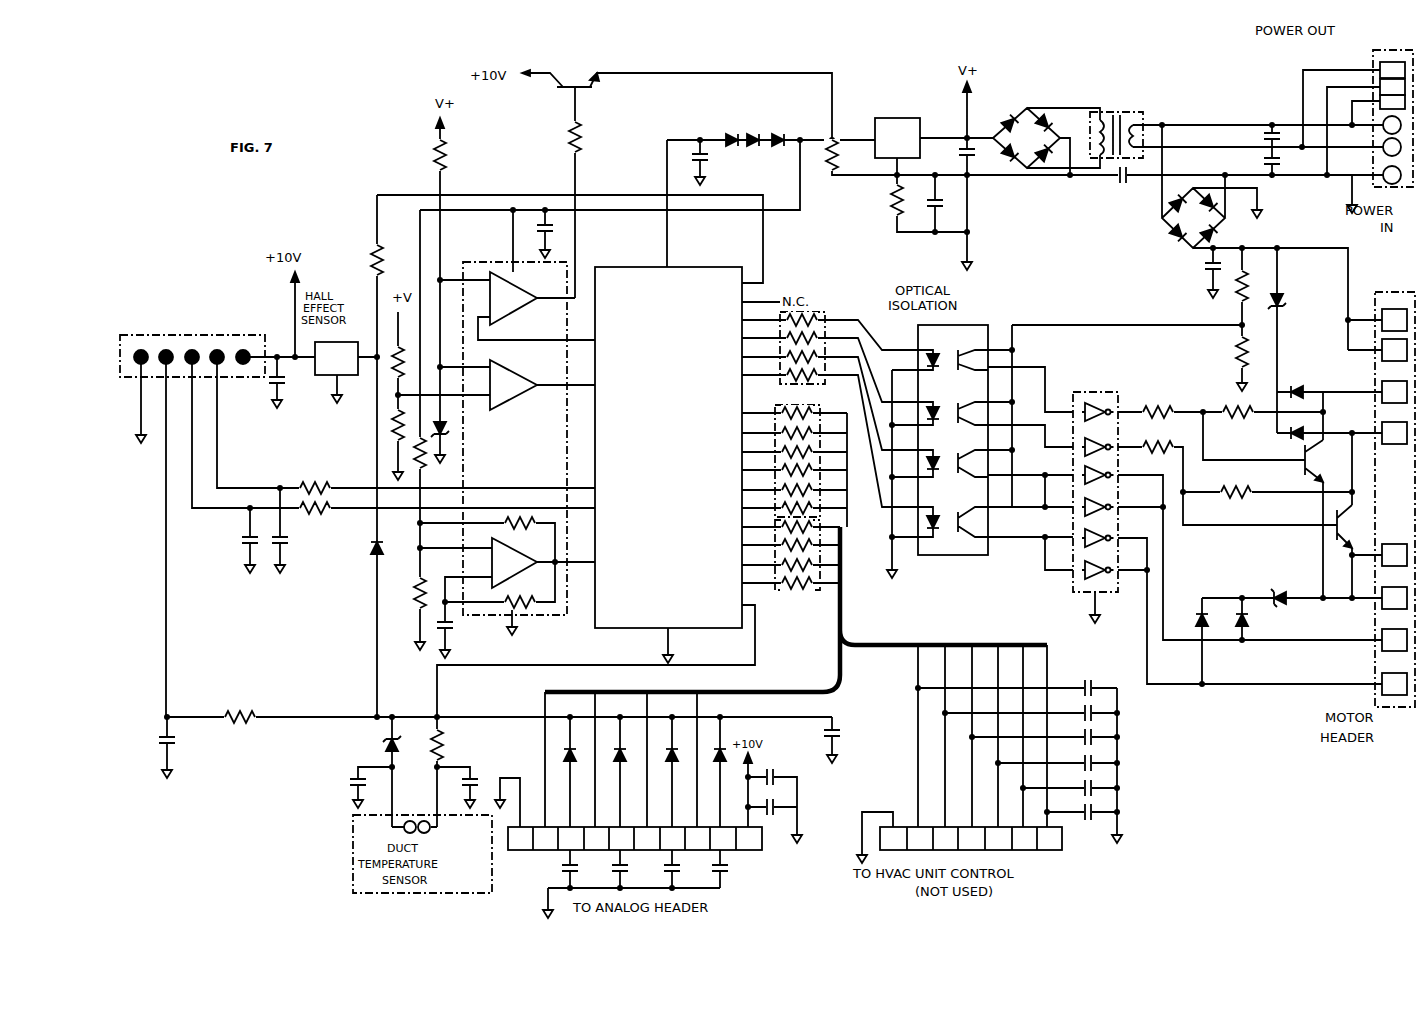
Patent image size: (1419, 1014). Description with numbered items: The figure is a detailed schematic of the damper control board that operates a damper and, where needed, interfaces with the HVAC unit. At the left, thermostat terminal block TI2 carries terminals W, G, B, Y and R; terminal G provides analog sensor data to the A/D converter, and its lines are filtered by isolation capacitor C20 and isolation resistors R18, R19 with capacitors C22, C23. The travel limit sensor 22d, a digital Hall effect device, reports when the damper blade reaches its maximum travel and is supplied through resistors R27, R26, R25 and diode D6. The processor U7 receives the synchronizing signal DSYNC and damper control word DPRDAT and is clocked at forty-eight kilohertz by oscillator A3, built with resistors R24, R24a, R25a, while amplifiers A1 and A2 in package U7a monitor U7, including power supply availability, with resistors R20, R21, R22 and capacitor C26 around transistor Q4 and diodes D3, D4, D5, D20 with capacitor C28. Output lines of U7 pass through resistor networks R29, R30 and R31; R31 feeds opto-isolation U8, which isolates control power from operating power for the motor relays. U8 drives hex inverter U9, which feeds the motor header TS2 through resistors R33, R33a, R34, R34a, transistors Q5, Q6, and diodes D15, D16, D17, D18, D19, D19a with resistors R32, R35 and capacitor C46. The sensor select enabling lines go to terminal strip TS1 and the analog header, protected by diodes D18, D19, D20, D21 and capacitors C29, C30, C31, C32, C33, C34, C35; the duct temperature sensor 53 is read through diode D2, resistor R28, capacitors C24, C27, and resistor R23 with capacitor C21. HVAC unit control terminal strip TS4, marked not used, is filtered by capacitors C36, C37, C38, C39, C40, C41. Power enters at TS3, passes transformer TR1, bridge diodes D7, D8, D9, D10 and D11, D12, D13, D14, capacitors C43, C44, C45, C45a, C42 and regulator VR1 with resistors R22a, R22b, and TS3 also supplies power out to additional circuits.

The terminal block TI2 is at (183, 324).
The damper travel limit sensor 22d is at (335, 375).
The duct temperature sensor 53 is at (434, 828).
The damper control processor U7 is at (669, 440).
The amplifier package U7a is at (515, 438).
The opto-isolation U8 is at (948, 556).
The hex inverter U9 is at (1086, 394).
The amplifier A1 is at (511, 296).
The amplifier A2 is at (510, 384).
The oscillator A3 is at (527, 563).
The voltage regulator VR1 is at (919, 116).
The transformer TR1 is at (1122, 110).
The sensor select enabling circuitry terminal strip TS1 is at (744, 850).
The motor header TS2 is at (1385, 288).
The power terminal strip TS3 is at (1374, 62).
The HVAC unit control terminal strip TS4 is at (1064, 844).
The transistor Q4 is at (585, 89).
The transistor Q5 is at (1302, 466).
The transistor Q6 is at (1332, 532).
The isolation resistor R18 is at (322, 478).
The isolation resistor R19 is at (318, 512).
The resistor R20 is at (383, 256).
The resistor R21 is at (446, 156).
The resistor R22 is at (582, 134).
The resistor R22a is at (830, 170).
The resistor R22b is at (894, 210).
The isolation resistor R23 is at (242, 722).
The resistor R24 is at (418, 592).
The resistor R24a is at (524, 608).
The resistor R25 is at (417, 465).
The resistor R25a is at (522, 517).
The resistor R26 is at (392, 428).
The resistor R27 is at (392, 370).
The resistor R28 is at (441, 738).
The resistor network R29 is at (791, 406).
The resistor network R30 is at (790, 592).
The resistor network R31 is at (816, 314).
The resistor R32 is at (1236, 351).
The resistor R33 is at (1168, 402).
The resistor R33a is at (1248, 428).
The resistor R34 is at (1168, 440).
The resistor R34a is at (1238, 497).
The resistor R35 is at (1237, 293).
The isolation capacitor C20 is at (272, 386).
The isolation capacitor C21 is at (160, 740).
The isolation capacitor C22 is at (245, 539).
The isolation capacitor C23 is at (284, 540).
The capacitor C24 is at (354, 778).
The capacitor C26 is at (553, 228).
The capacitor C27 is at (475, 780).
The capacitor C28 is at (706, 158).
The isolation capacitor C29 is at (566, 868).
The isolation capacitor C30 is at (615, 869).
The isolation capacitor C31 is at (667, 869).
The isolation capacitor C32 is at (716, 869).
The capacitor C33 is at (774, 775).
The capacitor C34 is at (774, 807).
The capacitor C35 is at (836, 732).
The isolation capacitor C36 is at (1083, 686).
The isolation capacitor C37 is at (1083, 711).
The isolation capacitor C38 is at (1083, 735).
The isolation capacitor C39 is at (1083, 761).
The isolation capacitor C40 is at (1083, 786).
The isolation capacitor C41 is at (1083, 810).
The capacitor C42 is at (947, 204).
The capacitor C43 is at (963, 152).
The capacitor C44 is at (1120, 178).
The capacitor C45 is at (1275, 166).
The capacitor C45a is at (1275, 129).
The capacitor C46 is at (1208, 265).
The diode D2 is at (386, 745).
The diode D3 is at (732, 134).
The diode D4 is at (754, 146).
The diode D5 is at (779, 134).
The diode D6 is at (444, 435).
The rectifier diode D7 is at (1006, 152).
The rectifier diode D8 is at (1043, 159).
The rectifier diode D9 is at (1048, 120).
The rectifier diode D10 is at (1008, 118).
The rectifier diode D11 is at (1172, 204).
The rectifier diode D12 is at (1176, 235).
The rectifier diode D13 is at (1214, 234).
The rectifier diode D14 is at (1214, 204).
The diode D15 is at (1281, 296).
The diode D16 is at (1302, 388).
The diode D17 is at (1293, 436).
The diode D18 is at (1278, 592).
The diode D19 is at (1248, 621).
The diode D19a is at (1198, 608).
The diode D20 is at (373, 554).
The diode D21 is at (718, 754).